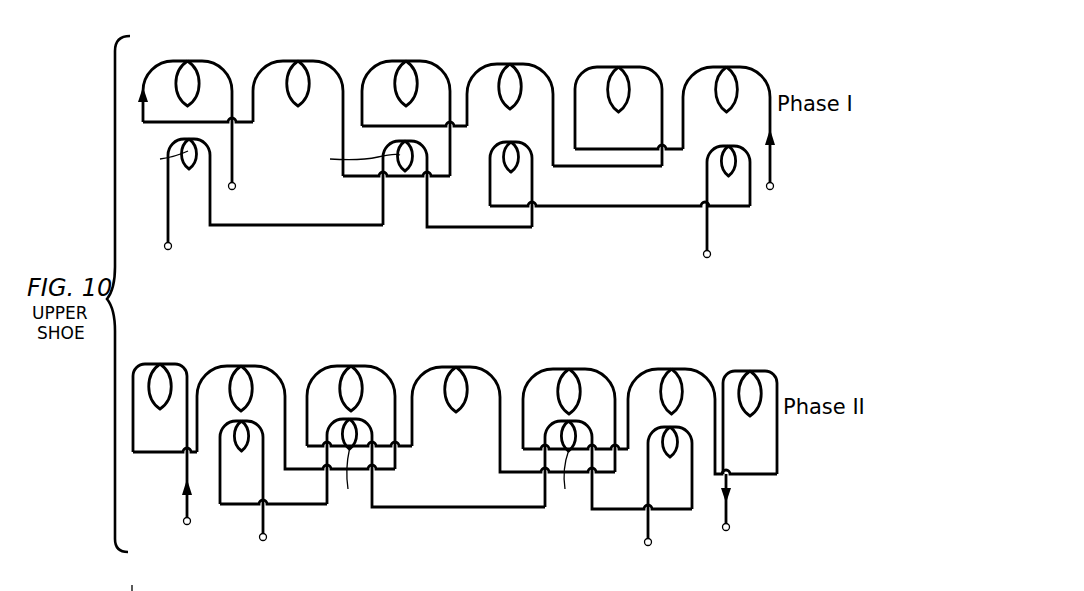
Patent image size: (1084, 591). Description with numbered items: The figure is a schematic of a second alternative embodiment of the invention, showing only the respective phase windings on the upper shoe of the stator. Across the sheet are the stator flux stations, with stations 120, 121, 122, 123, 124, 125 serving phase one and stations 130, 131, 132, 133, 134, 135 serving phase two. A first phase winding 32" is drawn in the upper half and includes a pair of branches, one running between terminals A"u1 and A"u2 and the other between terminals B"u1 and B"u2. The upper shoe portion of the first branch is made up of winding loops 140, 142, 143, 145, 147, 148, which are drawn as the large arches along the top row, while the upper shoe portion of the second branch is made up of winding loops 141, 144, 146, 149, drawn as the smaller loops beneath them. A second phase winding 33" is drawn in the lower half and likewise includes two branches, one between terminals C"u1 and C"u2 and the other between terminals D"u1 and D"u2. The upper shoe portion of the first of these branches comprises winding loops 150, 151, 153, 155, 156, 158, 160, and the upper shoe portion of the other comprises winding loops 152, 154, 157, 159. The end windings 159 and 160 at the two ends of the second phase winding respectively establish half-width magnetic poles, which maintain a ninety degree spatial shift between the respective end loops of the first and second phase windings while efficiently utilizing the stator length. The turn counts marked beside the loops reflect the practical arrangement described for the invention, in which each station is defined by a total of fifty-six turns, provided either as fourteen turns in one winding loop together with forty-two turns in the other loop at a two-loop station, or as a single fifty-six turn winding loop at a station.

The first phase winding 32 is at (136, 93).
The second phase winding 33 is at (126, 386).
The winding loop 140 is at (214, 62).
The winding loop 141 is at (195, 164).
The winding loop 142 is at (320, 62).
The winding loop 143 is at (438, 62).
The winding loop 144 is at (405, 172).
The winding loop 145 is at (534, 65).
The winding loop 146 is at (512, 162).
The winding loop 147 is at (640, 68).
The winding loop 148 is at (752, 68).
The winding loop 149 is at (726, 166).
The winding loop 150 is at (262, 367).
The winding loop 151 is at (262, 424).
The winding loop 152 is at (378, 367).
The winding loop 153 is at (376, 414).
The winding loop 154 is at (484, 368).
The winding loop 155 is at (597, 370).
The winding loop 156 is at (590, 414).
The winding loop 157 is at (689, 370).
The winding loop 158 is at (688, 428).
The end winding 159 is at (774, 372).
The end winding 160 is at (178, 365).
The stator flux station 120 is at (206, 244).
The stator flux station 121 is at (302, 244).
The stator flux station 122 is at (404, 247).
The stator flux station 123 is at (509, 249).
The stator flux station 124 is at (614, 249).
The stator flux station 125 is at (744, 251).
The stator flux station 130 is at (247, 287).
The stator flux station 131 is at (357, 287).
The stator flux station 132 is at (464, 292).
The stator flux station 133 is at (576, 292).
The stator flux station 134 is at (677, 292).
The stator flux station 135 is at (458, 289).